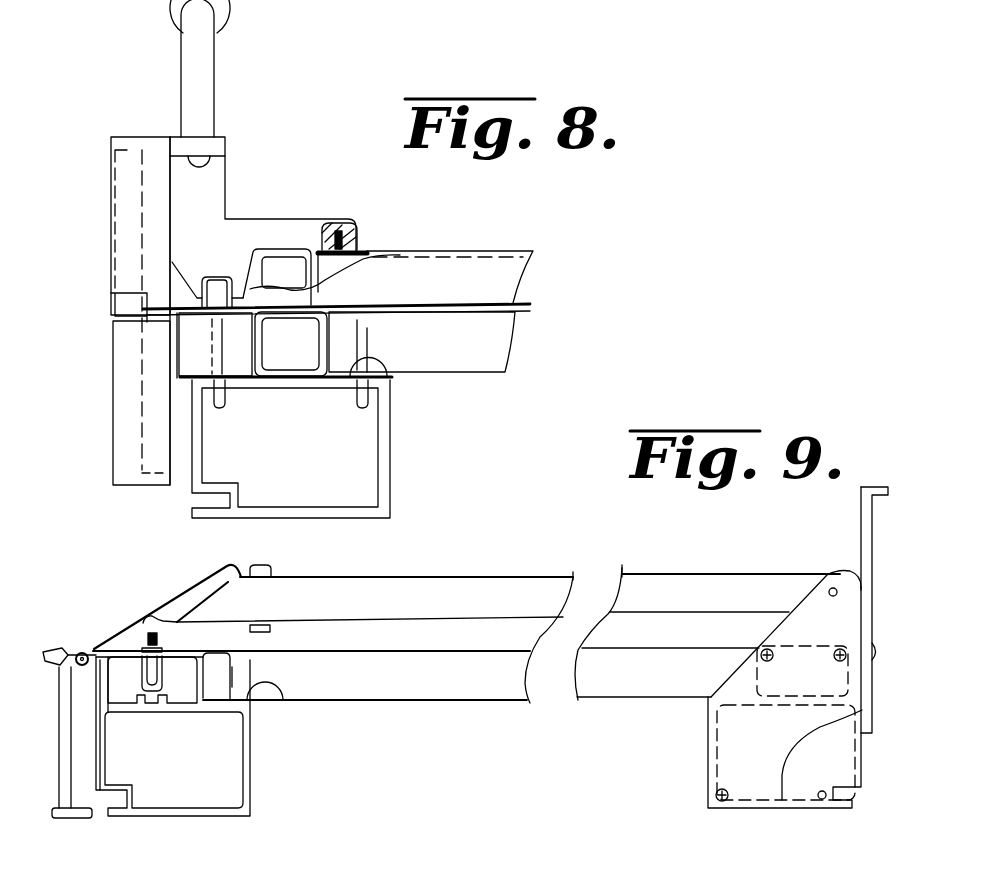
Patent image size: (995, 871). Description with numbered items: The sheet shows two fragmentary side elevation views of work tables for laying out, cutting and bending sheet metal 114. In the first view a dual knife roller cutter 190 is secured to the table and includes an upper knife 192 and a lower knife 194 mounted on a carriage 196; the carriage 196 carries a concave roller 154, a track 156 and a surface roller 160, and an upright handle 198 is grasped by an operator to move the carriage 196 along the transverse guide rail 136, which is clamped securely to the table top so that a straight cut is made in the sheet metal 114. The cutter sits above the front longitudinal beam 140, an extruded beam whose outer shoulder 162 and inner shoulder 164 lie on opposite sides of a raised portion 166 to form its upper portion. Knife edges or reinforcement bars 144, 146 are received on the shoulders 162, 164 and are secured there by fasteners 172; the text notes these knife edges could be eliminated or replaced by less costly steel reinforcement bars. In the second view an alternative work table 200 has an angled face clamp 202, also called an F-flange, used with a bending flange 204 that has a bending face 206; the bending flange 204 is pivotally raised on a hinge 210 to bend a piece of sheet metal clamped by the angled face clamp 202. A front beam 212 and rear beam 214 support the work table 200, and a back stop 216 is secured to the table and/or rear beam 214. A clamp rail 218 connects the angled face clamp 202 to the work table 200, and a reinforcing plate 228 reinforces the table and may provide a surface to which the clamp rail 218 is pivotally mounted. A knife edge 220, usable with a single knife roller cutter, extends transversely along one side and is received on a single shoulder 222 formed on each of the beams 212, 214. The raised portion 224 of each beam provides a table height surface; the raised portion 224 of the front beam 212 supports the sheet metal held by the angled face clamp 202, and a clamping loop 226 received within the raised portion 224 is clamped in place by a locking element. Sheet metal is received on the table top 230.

In FIG. 8, the sheet metal 114 is at (487, 301).
In FIG. 8, the transverse guide rail 136 is at (467, 267).
In FIG. 8, the front longitudinal beam 140 is at (383, 485).
In FIG. 8, the knife edge 144 is at (248, 347).
In FIG. 8, the knife edge 146 is at (490, 347).
In FIG. 8, the concave roller 154 is at (361, 252).
In FIG. 8, the track 156 is at (312, 250).
In FIG. 8, the surface roller 160 is at (218, 290).
In FIG. 8, the outer shoulder 162 is at (217, 380).
In FIG. 8, the inner shoulder 164 is at (383, 367).
In FIG. 8, the raised portion 166 is at (310, 353).
In FIG. 8, the fasteners 172 is at (365, 322).
In FIG. 8, the dual knife roller cutter 190 is at (148, 137).
In FIG. 8, the upper knife 192 is at (133, 306).
In FIG. 8, the lower knife 194 is at (155, 360).
In FIG. 8, the carriage 196 is at (238, 230).
In FIG. 8, the post 198 is at (203, 93).
In FIG. 9, the work table 200 is at (418, 700).
In FIG. 9, the angled face clamp 202 is at (182, 612).
In FIG. 9, the bending flange 204 is at (76, 815).
In FIG. 9, the bending face 206 is at (50, 657).
In FIG. 9, the hinge 210 is at (79, 652).
In FIG. 9, the front beam 212 is at (245, 753).
In FIG. 9, the rear beam 214 is at (842, 805).
In FIG. 9, the back stop 216 is at (865, 537).
In FIG. 9, the clamp rail 218 is at (483, 595).
In FIG. 9, the knife edge 220 is at (650, 685).
In FIG. 9, the single shoulder 222 is at (250, 698).
In FIG. 9, the raised portion 224 is at (183, 663).
In FIG. 9, the clamping loop 226 is at (152, 683).
In FIG. 9, the reinforcing plate 228 is at (817, 608).
In FIG. 9, the table top 230 is at (468, 665).